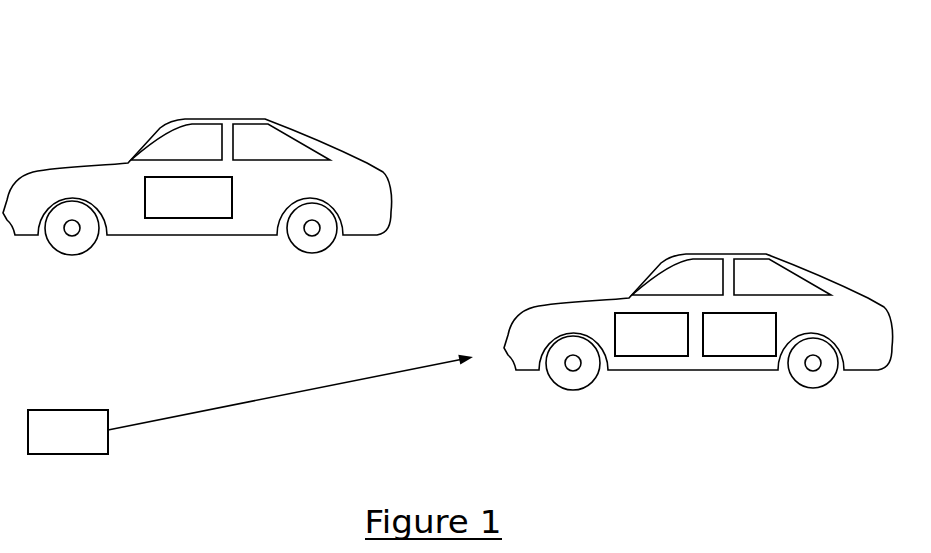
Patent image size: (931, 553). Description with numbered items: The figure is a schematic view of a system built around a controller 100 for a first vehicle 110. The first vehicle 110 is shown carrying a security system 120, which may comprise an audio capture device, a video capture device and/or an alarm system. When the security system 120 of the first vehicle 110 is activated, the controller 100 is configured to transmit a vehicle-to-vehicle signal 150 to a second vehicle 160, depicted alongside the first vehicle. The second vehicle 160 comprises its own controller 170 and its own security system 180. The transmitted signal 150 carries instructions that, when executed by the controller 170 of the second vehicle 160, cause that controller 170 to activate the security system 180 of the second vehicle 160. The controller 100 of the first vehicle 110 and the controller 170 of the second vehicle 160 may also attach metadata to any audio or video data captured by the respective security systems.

The controller 100 is at (68, 432).
The first vehicle 110 is at (215, 136).
The security system 120 is at (188, 197).
The transmitted signal 150 is at (290, 394).
The second vehicle 160 is at (698, 260).
The controller 170 is at (651, 334).
The security system 180 is at (739, 334).